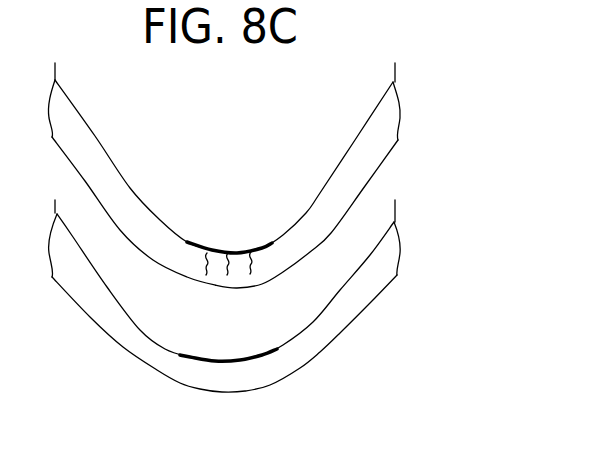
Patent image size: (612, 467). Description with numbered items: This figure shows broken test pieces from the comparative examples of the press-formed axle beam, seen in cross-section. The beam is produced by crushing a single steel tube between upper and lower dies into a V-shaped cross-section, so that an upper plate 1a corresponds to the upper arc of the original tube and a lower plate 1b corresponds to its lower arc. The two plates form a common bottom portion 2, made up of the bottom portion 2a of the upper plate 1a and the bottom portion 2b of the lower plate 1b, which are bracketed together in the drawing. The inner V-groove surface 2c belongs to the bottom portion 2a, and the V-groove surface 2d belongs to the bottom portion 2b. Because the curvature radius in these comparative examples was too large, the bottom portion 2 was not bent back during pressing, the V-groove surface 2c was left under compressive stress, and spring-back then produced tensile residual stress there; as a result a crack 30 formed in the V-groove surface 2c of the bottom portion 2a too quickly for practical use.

The upper plate 1a is at (388, 122).
The lower plate 1b is at (388, 254).
The bottom portion 2 is at (244, 280).
The bottom portion of the upper plate 2a is at (227, 277).
The bottom portion of the lower plate 2b is at (230, 384).
The V-groove surface of the bottom portion of the upper plate 2c is at (229, 249).
The V-groove surface of the bottom portion of the lower plate 2d is at (218, 354).
The crack 30 is at (252, 256).